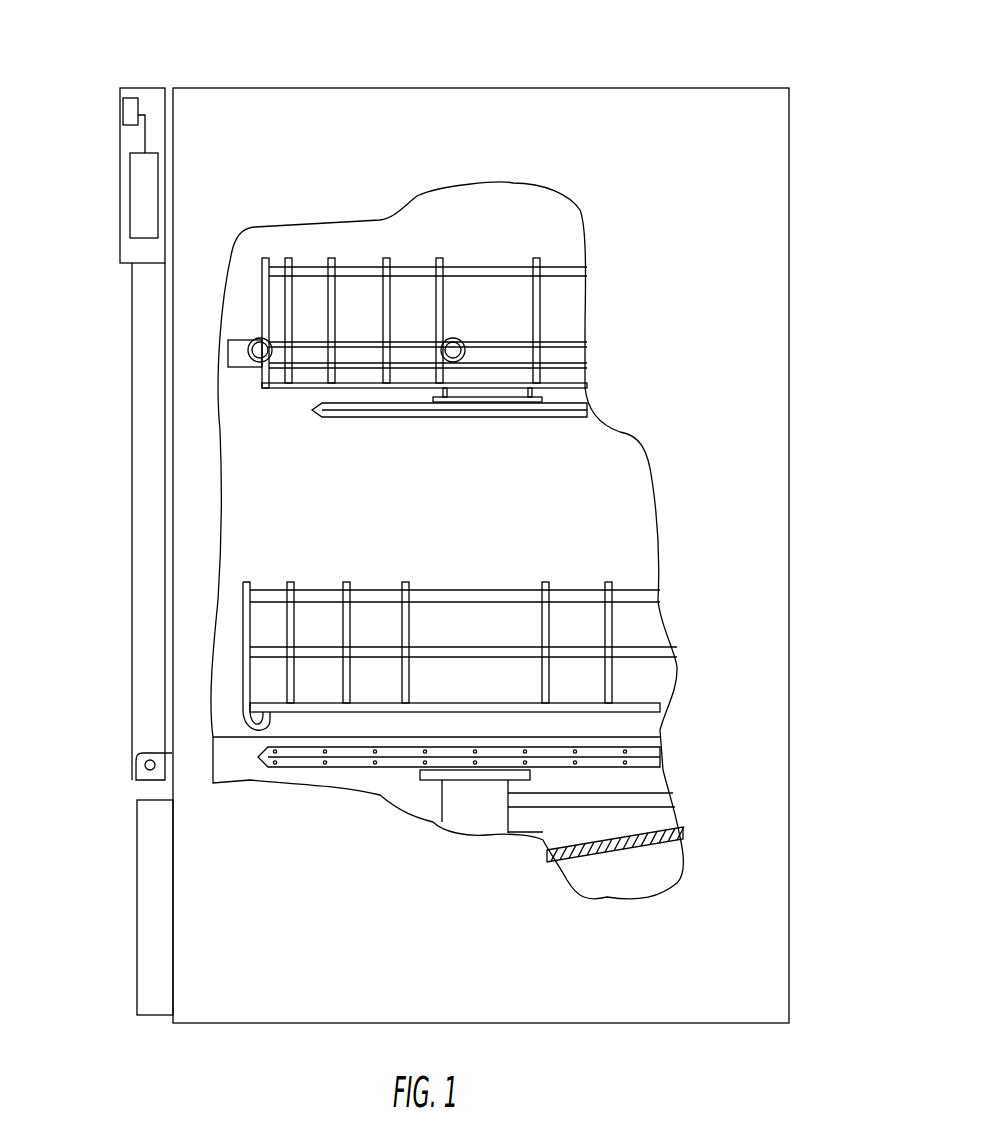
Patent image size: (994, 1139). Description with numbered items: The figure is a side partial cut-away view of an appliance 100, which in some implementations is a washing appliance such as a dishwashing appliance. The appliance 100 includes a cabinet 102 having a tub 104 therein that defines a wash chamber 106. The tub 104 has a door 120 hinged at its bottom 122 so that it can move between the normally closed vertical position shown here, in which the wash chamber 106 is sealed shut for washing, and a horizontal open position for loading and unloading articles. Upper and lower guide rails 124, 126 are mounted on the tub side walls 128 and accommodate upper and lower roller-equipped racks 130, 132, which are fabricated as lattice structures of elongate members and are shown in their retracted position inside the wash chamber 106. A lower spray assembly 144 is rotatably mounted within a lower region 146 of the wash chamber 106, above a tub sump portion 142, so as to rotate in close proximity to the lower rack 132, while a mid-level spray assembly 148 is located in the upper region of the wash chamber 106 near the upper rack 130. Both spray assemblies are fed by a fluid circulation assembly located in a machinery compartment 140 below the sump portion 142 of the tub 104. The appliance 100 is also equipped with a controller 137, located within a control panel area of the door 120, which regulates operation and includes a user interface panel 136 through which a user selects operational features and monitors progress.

The appliance 100 is at (675, 65).
The cabinet 102 is at (740, 204).
The tub 104 is at (285, 520).
The wash chamber 106 is at (258, 548).
The door 120 is at (138, 752).
The bottom 122 is at (133, 790).
The upper guide rail 124 is at (240, 367).
The lower guide rail 126 is at (227, 740).
The tub side walls 128 is at (317, 235).
The upper rack 130 is at (424, 340).
The lower rack 132 is at (497, 628).
The user interface panel 136 is at (130, 115).
The controller 137 is at (148, 207).
The machinery compartment 140 is at (643, 885).
The tub sump portion 142 is at (650, 845).
The lower spray assembly 144 is at (338, 767).
The lower region 146 is at (637, 720).
The mid-level spray assembly 148 is at (422, 433).